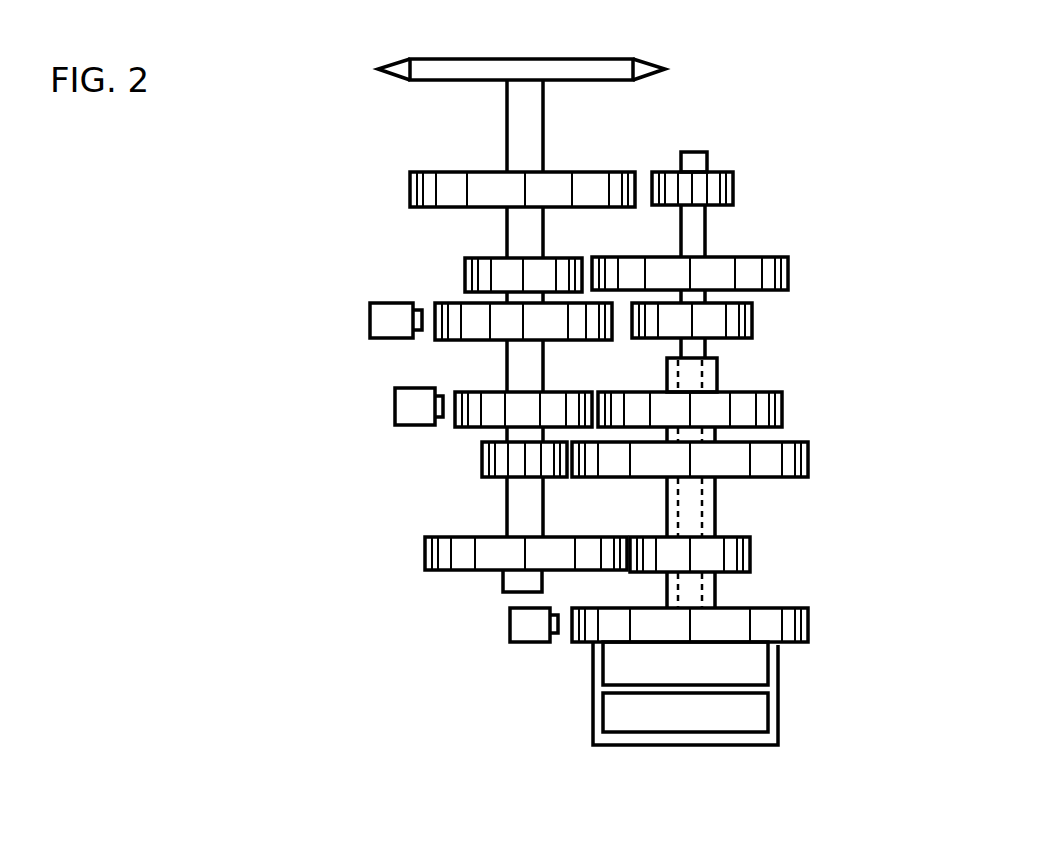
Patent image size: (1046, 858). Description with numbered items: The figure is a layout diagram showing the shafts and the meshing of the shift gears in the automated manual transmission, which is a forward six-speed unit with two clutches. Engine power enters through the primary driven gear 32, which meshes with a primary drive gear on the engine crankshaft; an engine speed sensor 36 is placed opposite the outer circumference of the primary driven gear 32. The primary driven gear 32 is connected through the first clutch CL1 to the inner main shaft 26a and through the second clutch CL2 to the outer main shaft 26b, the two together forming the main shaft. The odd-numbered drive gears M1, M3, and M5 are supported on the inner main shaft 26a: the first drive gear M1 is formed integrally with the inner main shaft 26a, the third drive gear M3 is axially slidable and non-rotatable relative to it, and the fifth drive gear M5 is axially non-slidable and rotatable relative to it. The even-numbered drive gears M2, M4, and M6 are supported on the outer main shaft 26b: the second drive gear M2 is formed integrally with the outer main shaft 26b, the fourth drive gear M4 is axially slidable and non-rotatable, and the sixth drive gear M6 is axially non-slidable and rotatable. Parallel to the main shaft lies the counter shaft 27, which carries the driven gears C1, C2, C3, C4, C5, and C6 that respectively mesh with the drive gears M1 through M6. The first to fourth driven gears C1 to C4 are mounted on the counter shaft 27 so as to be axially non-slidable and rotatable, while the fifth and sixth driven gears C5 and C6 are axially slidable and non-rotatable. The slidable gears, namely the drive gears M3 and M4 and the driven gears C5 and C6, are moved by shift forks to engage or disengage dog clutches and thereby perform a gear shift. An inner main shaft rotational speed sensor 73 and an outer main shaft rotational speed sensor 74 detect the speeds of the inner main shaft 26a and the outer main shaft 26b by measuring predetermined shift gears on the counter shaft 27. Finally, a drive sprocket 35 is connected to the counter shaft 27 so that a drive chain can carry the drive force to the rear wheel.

The drive sprocket 35 is at (458, 66).
The counter shaft 27 is at (520, 510).
The inner main shaft 26a is at (698, 152).
The outer main shaft 26b is at (717, 367).
The first driven gear C1 is at (408, 193).
The second driven gear C2 is at (425, 557).
The third driven gear C3 is at (457, 340).
The fourth driven gear C4 is at (487, 403).
The fifth driven gear C5 is at (465, 275).
The sixth driven gear C6 is at (482, 460).
The first drive gear M1 is at (733, 190).
The second drive gear M2 is at (752, 553).
The third drive gear M3 is at (752, 320).
The fourth drive gear M4 is at (782, 415).
The fifth drive gear M5 is at (787, 273).
The sixth drive gear M6 is at (810, 450).
The inner main shaft rotational speed sensor 73 is at (370, 333).
The outer main shaft rotational speed sensor 74 is at (395, 418).
The engine speed sensor 36 is at (510, 628).
The primary driven gear 32 is at (585, 643).
The first clutch CL1 is at (738, 715).
The second clutch CL2 is at (747, 665).